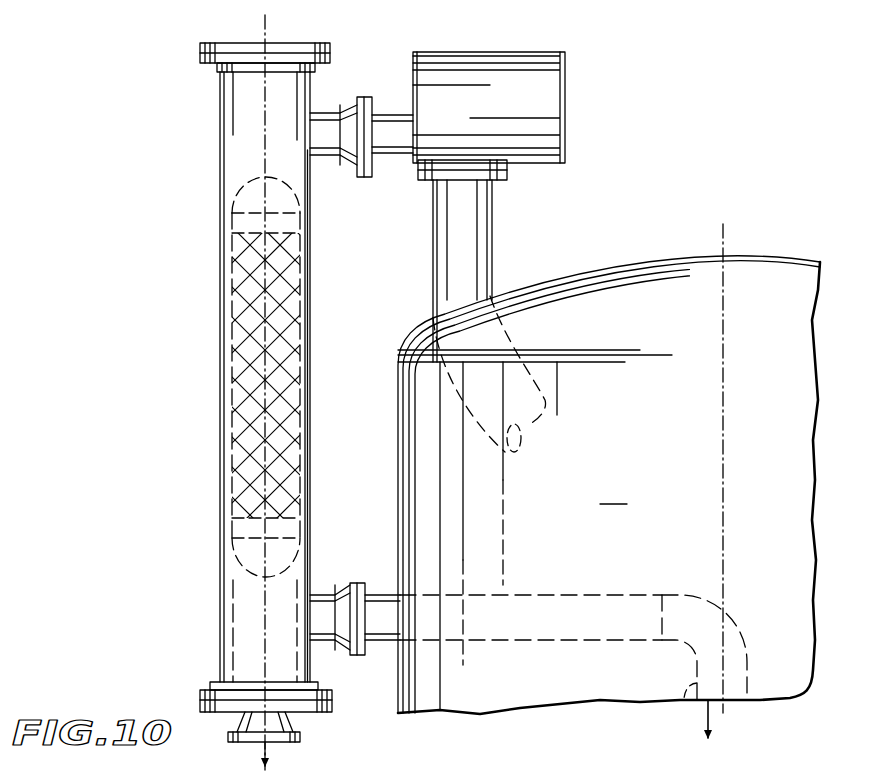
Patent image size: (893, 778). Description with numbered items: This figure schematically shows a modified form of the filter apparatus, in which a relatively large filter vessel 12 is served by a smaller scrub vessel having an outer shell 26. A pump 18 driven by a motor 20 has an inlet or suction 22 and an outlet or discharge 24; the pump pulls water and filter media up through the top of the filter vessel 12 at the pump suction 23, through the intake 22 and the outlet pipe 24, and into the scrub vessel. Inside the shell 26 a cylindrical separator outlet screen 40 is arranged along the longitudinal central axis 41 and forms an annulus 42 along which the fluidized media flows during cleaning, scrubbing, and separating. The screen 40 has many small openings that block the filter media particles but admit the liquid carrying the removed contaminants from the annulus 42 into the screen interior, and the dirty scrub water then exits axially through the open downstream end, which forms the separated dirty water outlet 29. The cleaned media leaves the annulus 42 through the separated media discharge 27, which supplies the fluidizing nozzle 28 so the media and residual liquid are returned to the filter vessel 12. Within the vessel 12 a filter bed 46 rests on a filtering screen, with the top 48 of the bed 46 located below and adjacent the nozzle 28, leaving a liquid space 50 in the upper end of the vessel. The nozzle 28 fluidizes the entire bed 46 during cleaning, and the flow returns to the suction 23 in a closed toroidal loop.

The filter vessel 12 is at (593, 481).
The pump 18 is at (489, 101).
The motor 20 is at (505, 52).
The inlet or suction 22 is at (421, 218).
The pump suction 23 is at (532, 440).
The outlet or discharge 24 is at (395, 160).
The outer shell 26 is at (265, 393).
The separated media discharge 27 is at (330, 592).
The fluidizing nozzle 28 is at (688, 704).
The separated dirty water outlet 29 is at (270, 748).
The separator outlet screen 40 is at (300, 300).
The longitudinal central axis 41 is at (265, 22).
The annulus 42 is at (313, 235).
The filter bed 46 is at (555, 706).
The top of the bed 48 is at (484, 735).
The liquid space 50 is at (613, 493).